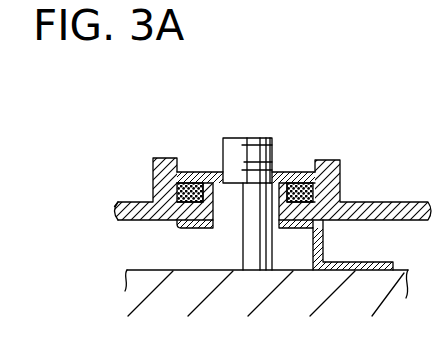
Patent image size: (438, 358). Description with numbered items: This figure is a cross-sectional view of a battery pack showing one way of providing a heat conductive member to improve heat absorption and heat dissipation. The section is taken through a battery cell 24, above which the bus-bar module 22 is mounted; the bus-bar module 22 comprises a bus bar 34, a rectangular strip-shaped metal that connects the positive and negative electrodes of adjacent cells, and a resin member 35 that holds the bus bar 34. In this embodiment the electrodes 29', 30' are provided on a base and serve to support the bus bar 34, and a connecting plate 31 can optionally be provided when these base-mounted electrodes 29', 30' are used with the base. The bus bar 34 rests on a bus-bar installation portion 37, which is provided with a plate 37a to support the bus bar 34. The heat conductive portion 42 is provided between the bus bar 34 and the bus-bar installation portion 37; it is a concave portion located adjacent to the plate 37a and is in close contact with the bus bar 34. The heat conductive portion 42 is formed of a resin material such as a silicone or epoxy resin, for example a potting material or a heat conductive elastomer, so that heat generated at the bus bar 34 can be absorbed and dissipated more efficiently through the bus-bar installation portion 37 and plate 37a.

The bus-bar module 22 is at (188, 108).
The battery cell 24 is at (146, 259).
The electrode 29' is at (275, 169).
The electrode 30' is at (245, 226).
The connecting plate 31 is at (318, 243).
The bus bar 34 is at (202, 172).
The resin member 35 is at (143, 202).
The bus-bar installation portion 37 is at (332, 185).
The plate 37a is at (300, 172).
The heat conductive portion 42 is at (310, 189).